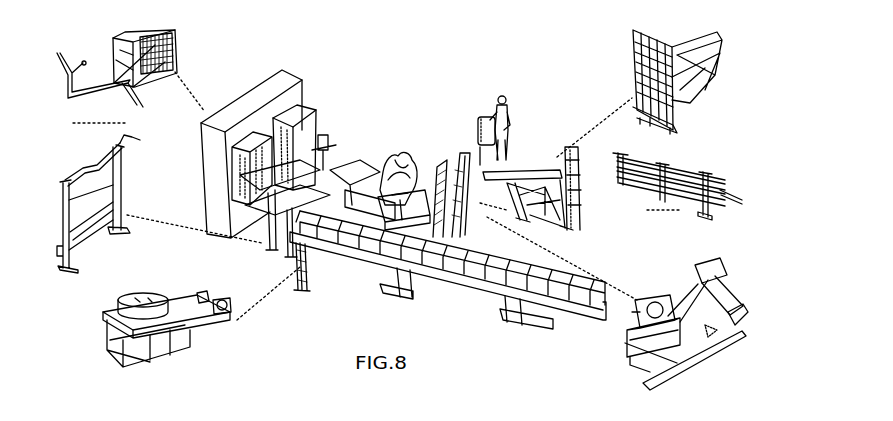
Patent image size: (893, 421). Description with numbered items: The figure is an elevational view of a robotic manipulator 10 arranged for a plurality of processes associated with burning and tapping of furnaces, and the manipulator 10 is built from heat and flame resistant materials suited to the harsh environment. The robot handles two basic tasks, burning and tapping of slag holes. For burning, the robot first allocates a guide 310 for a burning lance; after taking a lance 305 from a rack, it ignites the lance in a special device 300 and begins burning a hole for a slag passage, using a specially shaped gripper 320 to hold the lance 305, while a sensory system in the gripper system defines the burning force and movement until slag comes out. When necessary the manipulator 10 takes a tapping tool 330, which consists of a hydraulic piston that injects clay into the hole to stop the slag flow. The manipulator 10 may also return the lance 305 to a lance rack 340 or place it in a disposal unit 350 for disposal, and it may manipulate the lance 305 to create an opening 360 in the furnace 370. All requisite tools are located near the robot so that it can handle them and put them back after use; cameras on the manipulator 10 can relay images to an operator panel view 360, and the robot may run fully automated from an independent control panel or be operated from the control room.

The manipulator 10 is at (405, 158).
The special device 300 is at (131, 81).
The lance 305 is at (138, 146).
The guide 310 is at (143, 289).
The gripper 320 is at (201, 337).
The tapping tool 330 is at (683, 93).
The lance rack 340 is at (663, 193).
The disposal unit 350 is at (675, 325).
The opening 360 is at (316, 121).
The furnace 370 is at (222, 123).